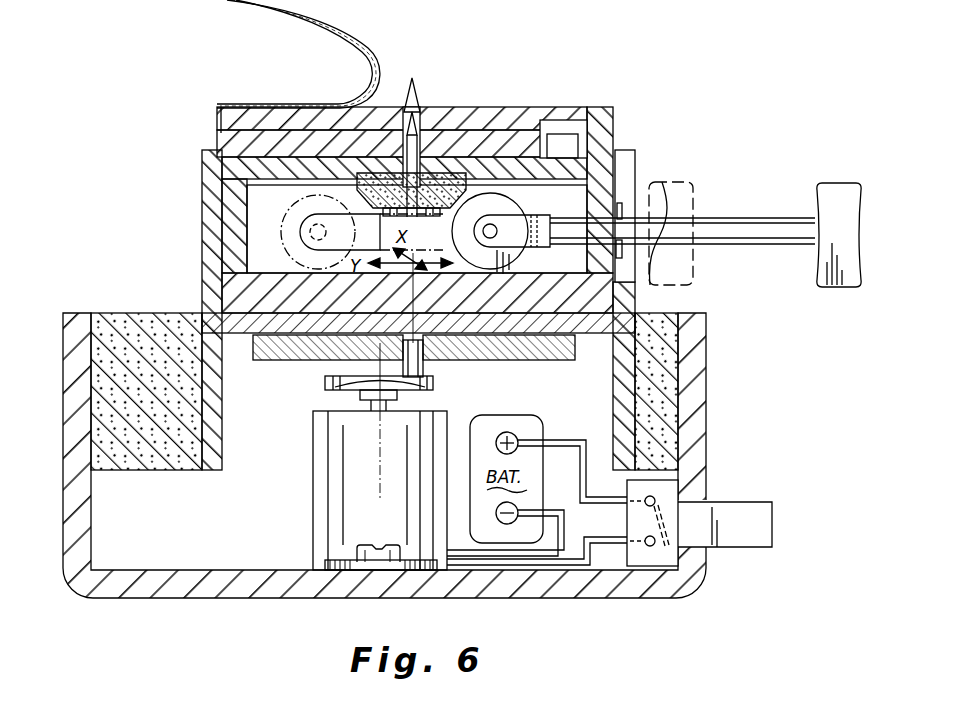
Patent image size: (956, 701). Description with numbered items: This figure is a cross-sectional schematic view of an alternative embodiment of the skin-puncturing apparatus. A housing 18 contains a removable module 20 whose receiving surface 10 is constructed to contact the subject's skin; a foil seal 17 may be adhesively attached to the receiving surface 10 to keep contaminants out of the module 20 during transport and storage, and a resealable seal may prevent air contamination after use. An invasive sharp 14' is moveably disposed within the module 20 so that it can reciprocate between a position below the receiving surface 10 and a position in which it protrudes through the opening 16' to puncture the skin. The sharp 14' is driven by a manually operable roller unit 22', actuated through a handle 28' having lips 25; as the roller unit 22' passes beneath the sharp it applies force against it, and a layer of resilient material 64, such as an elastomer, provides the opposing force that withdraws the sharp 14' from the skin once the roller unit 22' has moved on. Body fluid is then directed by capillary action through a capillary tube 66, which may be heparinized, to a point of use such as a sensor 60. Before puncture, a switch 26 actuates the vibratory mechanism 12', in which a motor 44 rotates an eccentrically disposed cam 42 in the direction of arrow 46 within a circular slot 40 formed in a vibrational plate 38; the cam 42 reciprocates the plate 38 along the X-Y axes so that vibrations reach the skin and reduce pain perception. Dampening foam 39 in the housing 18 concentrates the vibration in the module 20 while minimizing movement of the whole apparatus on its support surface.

The receiving surface 10 is at (553, 108).
The vibratory mechanism 12' is at (352, 490).
The invasive sharp 14' is at (409, 126).
The opening 16' is at (440, 118).
The foil seal 17 is at (223, 4).
The housing 18 is at (75, 305).
The removable module 20 is at (210, 137).
The manually operable roller unit 22' is at (548, 231).
The lips 25 is at (621, 208).
The switch 26 is at (760, 502).
The handle 28' is at (832, 213).
The vibrational plate 38 is at (523, 358).
The dampening foam 39 is at (150, 312).
The circular slot 40 is at (453, 348).
The eccentrically disposed cam 42 is at (432, 372).
The motor 44 is at (388, 539).
The arrow 46 is at (369, 367).
The sensor 60 is at (569, 138).
The layer of resilient material 64 is at (437, 173).
The capillary tube 66 is at (517, 123).